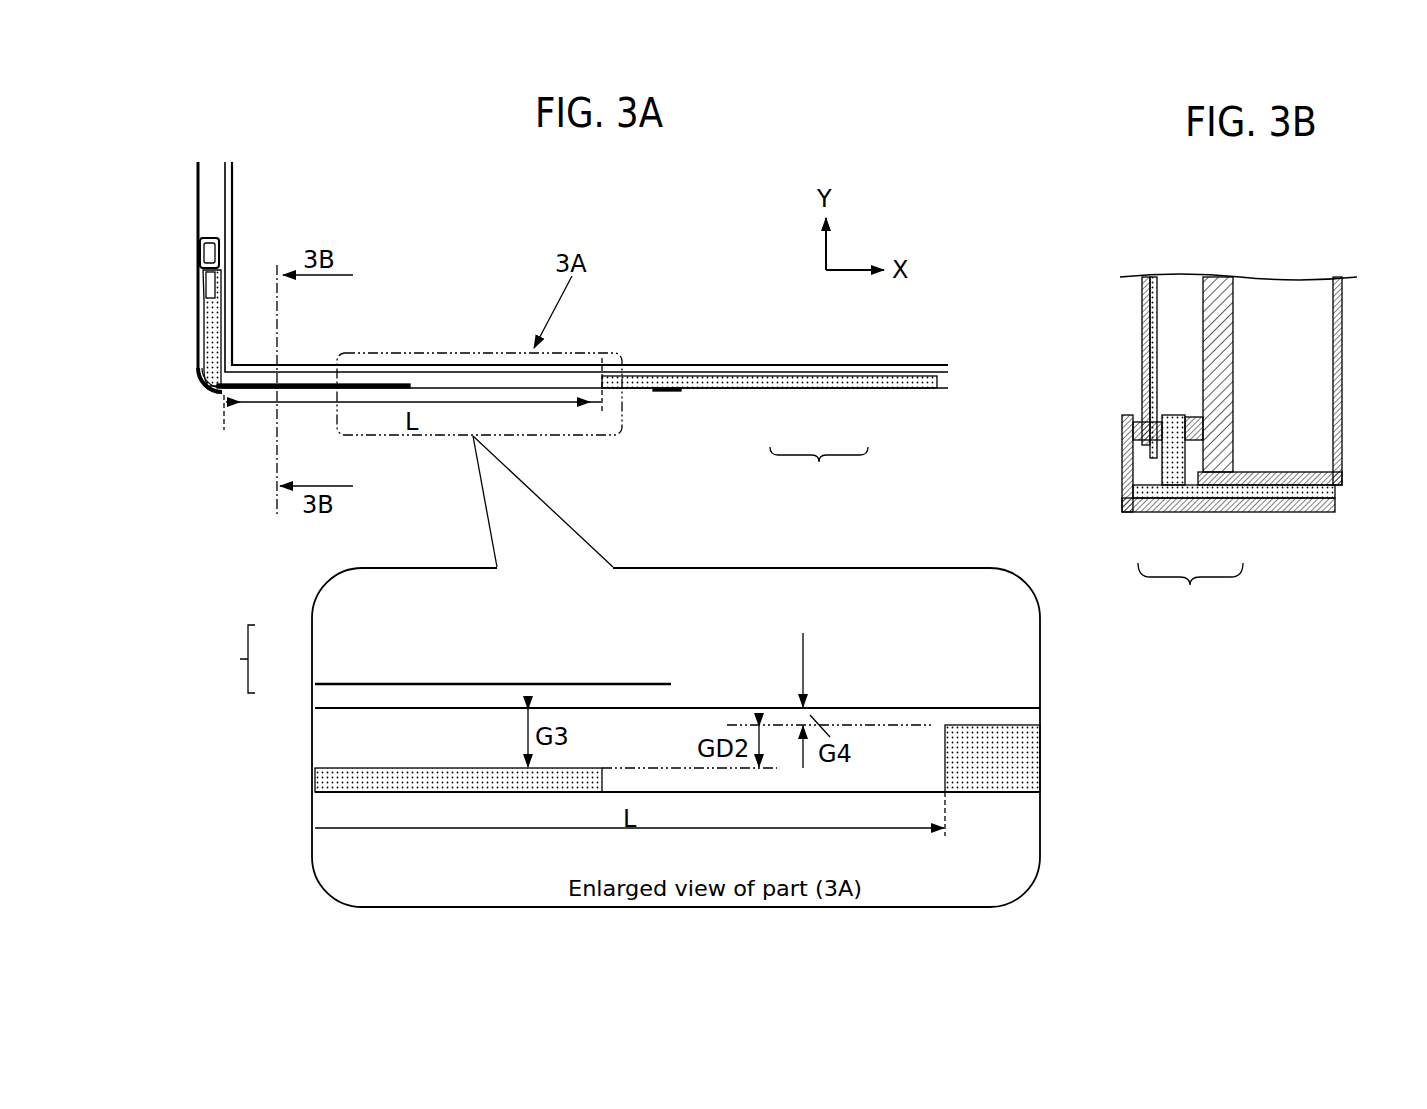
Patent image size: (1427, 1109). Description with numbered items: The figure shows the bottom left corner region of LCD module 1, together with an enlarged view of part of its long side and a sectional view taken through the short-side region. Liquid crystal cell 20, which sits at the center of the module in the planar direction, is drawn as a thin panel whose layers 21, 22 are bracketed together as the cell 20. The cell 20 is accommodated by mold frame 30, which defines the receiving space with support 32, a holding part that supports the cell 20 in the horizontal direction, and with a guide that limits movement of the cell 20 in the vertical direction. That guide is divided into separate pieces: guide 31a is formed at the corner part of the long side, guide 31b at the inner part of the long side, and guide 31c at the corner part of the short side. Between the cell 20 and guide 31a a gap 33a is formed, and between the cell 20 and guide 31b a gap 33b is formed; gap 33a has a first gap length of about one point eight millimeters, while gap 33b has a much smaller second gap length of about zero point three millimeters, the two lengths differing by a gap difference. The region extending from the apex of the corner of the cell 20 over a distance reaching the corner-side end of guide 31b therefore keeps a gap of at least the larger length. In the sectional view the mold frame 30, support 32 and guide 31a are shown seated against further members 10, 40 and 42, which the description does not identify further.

In FIG. 3A, the LCD module 1 is at (177, 222).
In FIG. 3B, the housing bottom 10 is at (1273, 505).
In FIG. 3A, the liquid crystal cell 20 is at (536, 570).
In FIG. 3A, the display layer 21 is at (766, 368).
In FIG. 3B, the display layer 21 is at (1158, 292).
In FIG. 3A, the cover layer 22 is at (817, 350).
In FIG. 3B, the cover layer 22 is at (1142, 281).
In FIG. 3B, the mold frame 30 is at (1190, 588).
In FIG. 3A, the guide 31a is at (307, 389).
In FIG. 3B, the guide 31a is at (1155, 491).
In FIG. 3A, the guide 31b is at (743, 381).
In FIG. 3A, the guide 31c is at (210, 335).
In FIG. 3A, the support 32 is at (458, 380).
In FIG. 3B, the support 32 is at (1173, 440).
In FIG. 3A, the gap 33a is at (297, 375).
In FIG. 3B, the gap 33a is at (1148, 472).
In FIG. 3A, the gap 33b is at (635, 370).
In FIG. 3B, the frame 40 is at (1342, 447).
In FIG. 3B, the frame wall 42 is at (1222, 279).